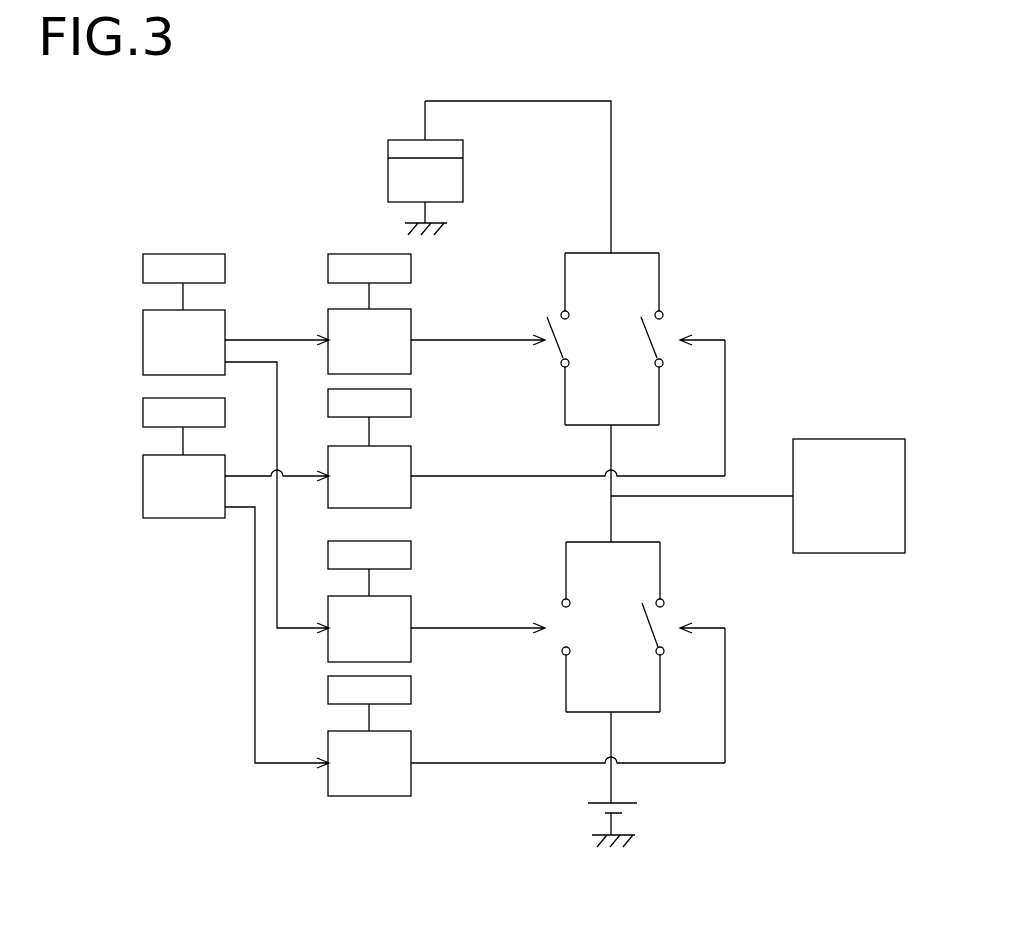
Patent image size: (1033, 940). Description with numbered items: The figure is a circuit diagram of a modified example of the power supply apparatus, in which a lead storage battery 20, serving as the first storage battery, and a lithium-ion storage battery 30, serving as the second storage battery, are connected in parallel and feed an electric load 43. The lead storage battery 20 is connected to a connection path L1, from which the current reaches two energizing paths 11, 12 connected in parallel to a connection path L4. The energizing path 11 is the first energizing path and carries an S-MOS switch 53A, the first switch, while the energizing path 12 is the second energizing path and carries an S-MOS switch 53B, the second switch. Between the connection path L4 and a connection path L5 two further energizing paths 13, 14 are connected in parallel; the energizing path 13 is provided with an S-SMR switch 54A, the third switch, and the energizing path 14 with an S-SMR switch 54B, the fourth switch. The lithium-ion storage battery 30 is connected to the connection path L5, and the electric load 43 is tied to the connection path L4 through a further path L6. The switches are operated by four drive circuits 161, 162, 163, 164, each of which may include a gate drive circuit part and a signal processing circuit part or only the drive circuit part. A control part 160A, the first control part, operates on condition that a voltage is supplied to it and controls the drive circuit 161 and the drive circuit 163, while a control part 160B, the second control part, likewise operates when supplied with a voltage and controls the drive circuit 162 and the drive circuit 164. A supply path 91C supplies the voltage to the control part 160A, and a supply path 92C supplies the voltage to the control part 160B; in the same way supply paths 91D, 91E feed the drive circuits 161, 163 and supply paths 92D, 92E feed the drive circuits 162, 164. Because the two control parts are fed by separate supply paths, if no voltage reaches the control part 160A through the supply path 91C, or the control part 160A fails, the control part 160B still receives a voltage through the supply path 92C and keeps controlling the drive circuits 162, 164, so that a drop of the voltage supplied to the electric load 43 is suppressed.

The connection path L1 is at (513, 101).
The lead storage battery 20 is at (440, 139).
The energizing path 11 is at (582, 312).
The energizing path 12 is at (641, 312).
The S-MOS switch 53A is at (558, 350).
The S-MOS switch 53B is at (652, 350).
The connection path L4 is at (611, 512).
The sixth power line L6 is at (756, 498).
The electric load 43 is at (880, 438).
The energizing path 13 is at (582, 620).
The energizing path 14 is at (658, 619).
The S-SMR switch 54A is at (553, 650).
The S-SMR switch 54B is at (649, 650).
The connection path L5 is at (609, 784).
The lithium-ion storage battery 30 is at (630, 802).
The supply path 91C is at (143, 266).
The supply path 92C is at (143, 410).
The supply path 91D is at (411, 268).
The supply path 92D is at (411, 404).
The supply path 91E is at (411, 556).
The supply path 92E is at (411, 691).
The control part 160A is at (143, 330).
The control part 160B is at (143, 475).
The drive circuit 161 is at (411, 325).
The drive circuit 162 is at (411, 460).
The drive circuit 163 is at (411, 610).
The drive circuit 164 is at (411, 788).